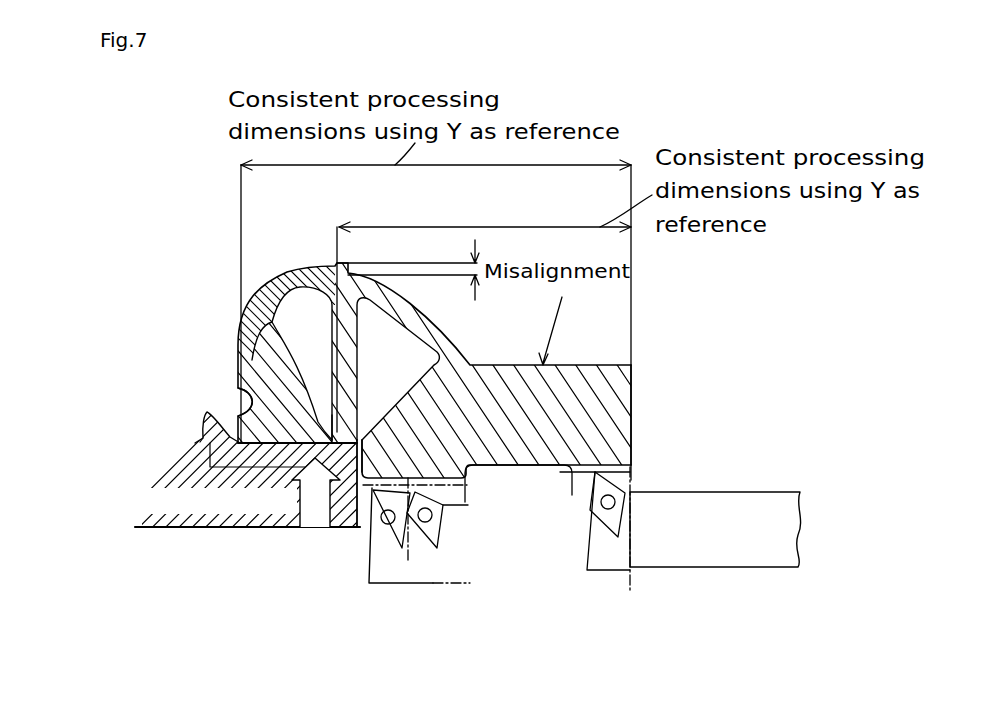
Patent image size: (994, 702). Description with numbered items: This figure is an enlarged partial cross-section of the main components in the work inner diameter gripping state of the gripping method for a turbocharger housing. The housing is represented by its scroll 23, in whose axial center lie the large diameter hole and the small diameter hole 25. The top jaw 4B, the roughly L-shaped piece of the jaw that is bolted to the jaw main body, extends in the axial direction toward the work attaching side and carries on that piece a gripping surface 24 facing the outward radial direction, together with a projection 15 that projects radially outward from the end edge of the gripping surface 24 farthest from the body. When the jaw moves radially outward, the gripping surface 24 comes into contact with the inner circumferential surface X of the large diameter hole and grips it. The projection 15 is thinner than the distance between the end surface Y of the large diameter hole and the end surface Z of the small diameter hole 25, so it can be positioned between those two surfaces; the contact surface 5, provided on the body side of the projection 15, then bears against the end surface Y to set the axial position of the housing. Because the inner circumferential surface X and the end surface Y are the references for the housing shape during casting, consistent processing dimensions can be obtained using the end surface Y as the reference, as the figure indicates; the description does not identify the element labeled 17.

The contact surface 5 is at (243, 325).
The scroll 23 is at (282, 323).
The gripping surface 24 is at (248, 398).
The flange portion 17 is at (560, 300).
The top jaw 4B is at (198, 530).
The projection 15 is at (347, 525).
The small diameter hole 25 is at (363, 505).
The inner circumferential surface X is at (200, 442).
The end surface Y is at (235, 343).
The end surface Z is at (362, 447).